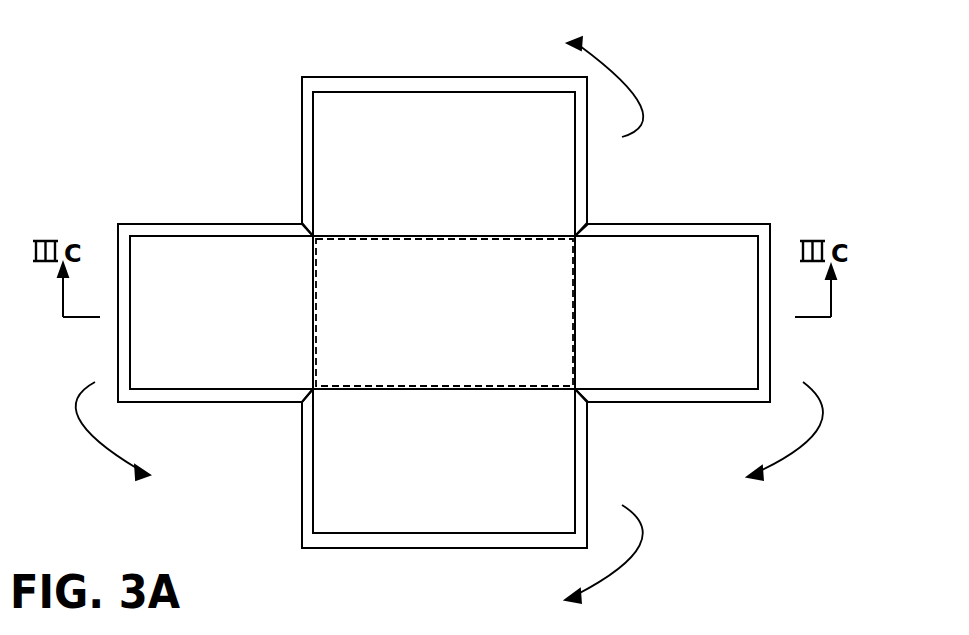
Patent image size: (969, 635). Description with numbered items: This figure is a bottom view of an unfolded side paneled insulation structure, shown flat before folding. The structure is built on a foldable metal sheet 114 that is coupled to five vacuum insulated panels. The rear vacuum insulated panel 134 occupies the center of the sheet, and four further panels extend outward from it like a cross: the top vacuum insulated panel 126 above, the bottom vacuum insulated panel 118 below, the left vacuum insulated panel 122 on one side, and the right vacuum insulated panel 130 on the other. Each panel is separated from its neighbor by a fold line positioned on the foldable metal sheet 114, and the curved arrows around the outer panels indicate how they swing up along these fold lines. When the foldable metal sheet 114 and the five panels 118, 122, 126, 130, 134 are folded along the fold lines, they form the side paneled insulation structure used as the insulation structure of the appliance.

The foldable metal sheet 114 is at (468, 325).
The bottom vacuum insulated panel 118 is at (433, 540).
The left vacuum insulated panel 122 is at (182, 230).
The top vacuum insulated panel 126 is at (392, 80).
The right vacuum insulated panel 130 is at (718, 230).
The rear vacuum insulated panel 134 is at (377, 267).